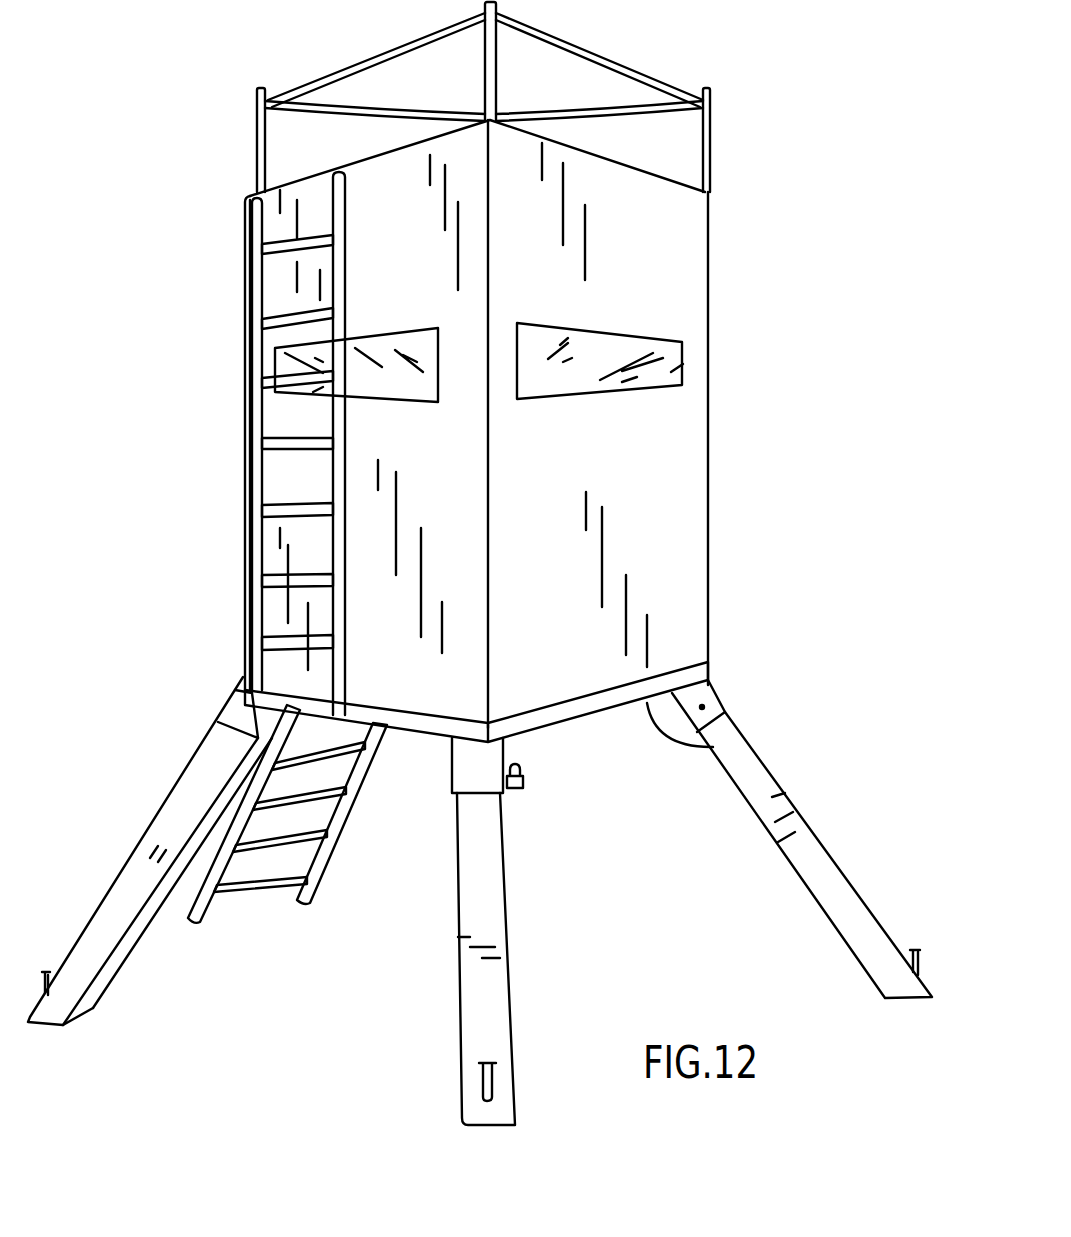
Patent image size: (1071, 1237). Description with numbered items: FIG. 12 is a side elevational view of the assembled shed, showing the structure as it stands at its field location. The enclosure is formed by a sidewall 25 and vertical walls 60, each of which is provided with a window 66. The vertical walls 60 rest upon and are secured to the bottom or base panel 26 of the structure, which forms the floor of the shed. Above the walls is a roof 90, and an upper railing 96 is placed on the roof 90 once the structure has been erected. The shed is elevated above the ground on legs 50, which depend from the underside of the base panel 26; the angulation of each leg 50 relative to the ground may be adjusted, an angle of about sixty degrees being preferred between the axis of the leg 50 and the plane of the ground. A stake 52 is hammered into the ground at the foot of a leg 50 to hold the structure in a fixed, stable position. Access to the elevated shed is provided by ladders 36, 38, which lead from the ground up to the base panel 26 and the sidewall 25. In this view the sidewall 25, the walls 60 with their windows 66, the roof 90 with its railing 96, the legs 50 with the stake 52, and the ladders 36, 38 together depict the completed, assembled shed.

The sidewall 25 is at (695, 492).
The bottom or base panel 26 is at (733, 733).
The ladder 36 is at (265, 887).
The ladder 38 is at (247, 628).
The leg 50 is at (823, 870).
The stake 52 is at (492, 1078).
The vertical wall 60 is at (692, 585).
The window 66 is at (672, 372).
The roof 90 is at (680, 153).
The upper railing 96 is at (710, 133).